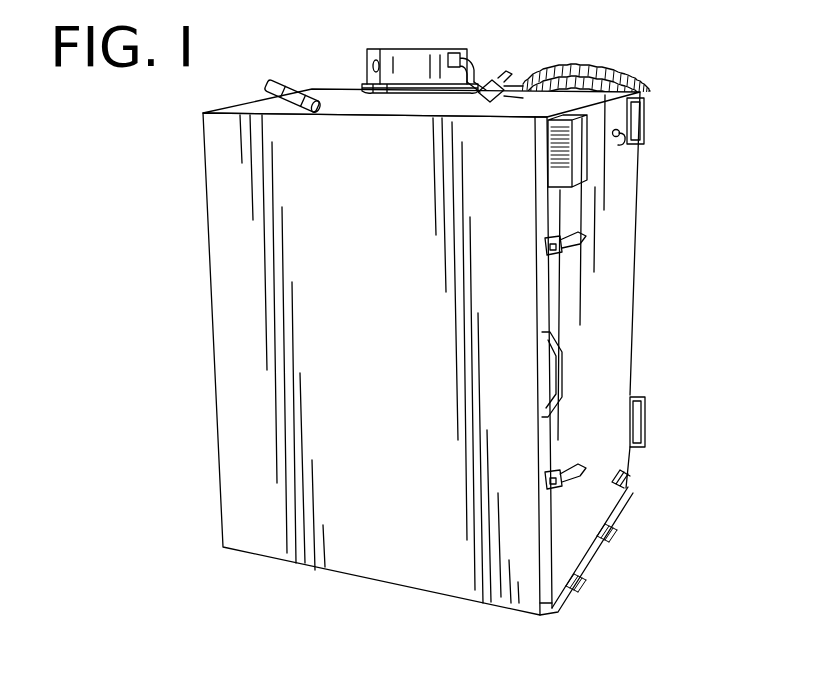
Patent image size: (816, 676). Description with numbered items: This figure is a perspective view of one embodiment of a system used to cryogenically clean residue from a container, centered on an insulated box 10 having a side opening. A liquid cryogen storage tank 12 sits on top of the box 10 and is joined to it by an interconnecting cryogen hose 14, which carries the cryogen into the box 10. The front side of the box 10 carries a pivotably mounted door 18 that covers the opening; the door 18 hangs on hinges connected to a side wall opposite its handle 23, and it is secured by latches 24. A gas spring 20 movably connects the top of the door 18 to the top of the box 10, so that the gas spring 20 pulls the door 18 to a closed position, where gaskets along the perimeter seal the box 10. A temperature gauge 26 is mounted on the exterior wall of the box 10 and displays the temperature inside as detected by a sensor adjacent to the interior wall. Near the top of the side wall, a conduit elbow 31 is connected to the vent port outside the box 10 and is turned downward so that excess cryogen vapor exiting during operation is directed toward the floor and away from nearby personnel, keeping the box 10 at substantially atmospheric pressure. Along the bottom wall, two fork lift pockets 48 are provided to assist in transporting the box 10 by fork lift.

The insulated box 10 is at (703, 252).
The liquid cryogen storage tank 12 is at (415, 48).
The interconnecting cryogen hose 14 is at (625, 70).
The door 18 is at (230, 224).
The gas spring 20 is at (288, 84).
The handle 23 is at (563, 373).
The latches 24 is at (578, 236).
The temperature gauge 26 is at (573, 158).
The conduit elbow 31 is at (625, 146).
The fork lift pockets 48 is at (640, 133).